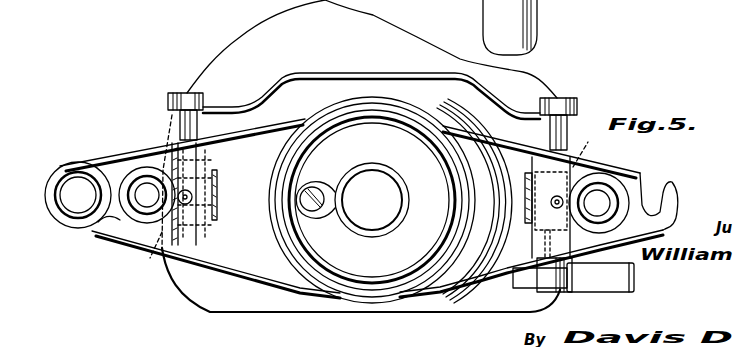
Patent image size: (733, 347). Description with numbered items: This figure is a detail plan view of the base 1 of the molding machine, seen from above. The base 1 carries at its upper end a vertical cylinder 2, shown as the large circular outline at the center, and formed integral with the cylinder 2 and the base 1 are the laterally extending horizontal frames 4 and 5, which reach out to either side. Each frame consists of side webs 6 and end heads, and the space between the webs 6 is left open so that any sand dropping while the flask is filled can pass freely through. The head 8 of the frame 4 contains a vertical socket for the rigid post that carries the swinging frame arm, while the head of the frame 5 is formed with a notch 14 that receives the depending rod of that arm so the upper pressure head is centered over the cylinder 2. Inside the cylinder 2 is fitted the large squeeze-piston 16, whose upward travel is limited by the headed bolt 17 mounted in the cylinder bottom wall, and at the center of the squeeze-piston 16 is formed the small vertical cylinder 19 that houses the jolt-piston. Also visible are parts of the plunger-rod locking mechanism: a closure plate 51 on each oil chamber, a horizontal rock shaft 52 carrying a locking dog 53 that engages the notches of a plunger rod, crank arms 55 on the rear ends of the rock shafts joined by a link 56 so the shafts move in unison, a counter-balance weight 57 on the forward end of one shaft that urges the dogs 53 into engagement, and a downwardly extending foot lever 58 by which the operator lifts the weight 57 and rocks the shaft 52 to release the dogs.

The base 1 is at (238, 42).
The vertical cylinder 2 is at (371, 100).
The horizontal frame 4 is at (139, 152).
The horizontal frame 5 is at (623, 172).
The side web 6 is at (259, 138).
The end head 8 is at (122, 236).
The notch 14 is at (650, 192).
The squeeze-piston 16 is at (419, 132).
The headed bolt 17 is at (299, 198).
The small vertical cylinder 19 is at (384, 172).
The closure plate 51 is at (218, 206).
The rock shaft 52 is at (183, 124).
The locking dog 53 is at (150, 254).
The crank arm 55 is at (178, 93).
The link 56 is at (312, 76).
The counter-balance weight 57 is at (598, 281).
The foot lever 58 is at (523, 284).